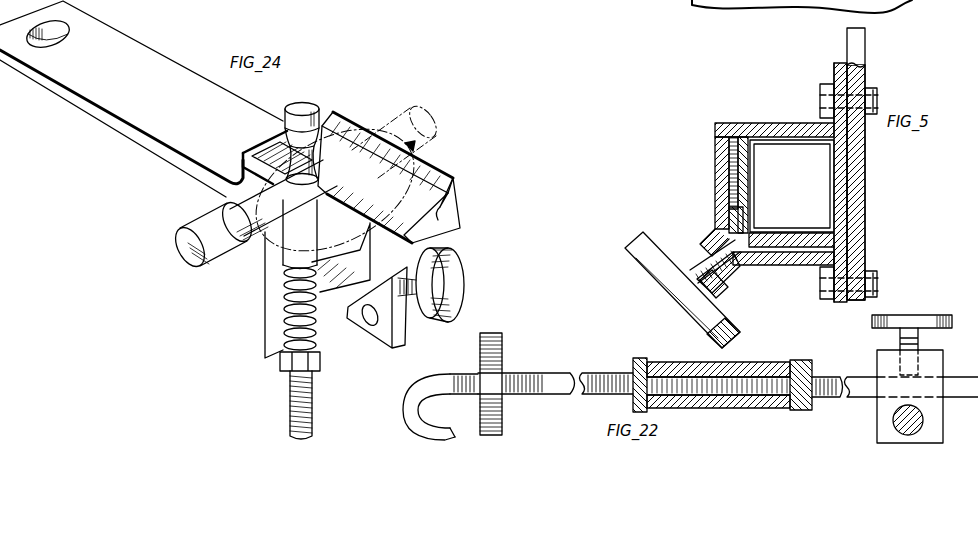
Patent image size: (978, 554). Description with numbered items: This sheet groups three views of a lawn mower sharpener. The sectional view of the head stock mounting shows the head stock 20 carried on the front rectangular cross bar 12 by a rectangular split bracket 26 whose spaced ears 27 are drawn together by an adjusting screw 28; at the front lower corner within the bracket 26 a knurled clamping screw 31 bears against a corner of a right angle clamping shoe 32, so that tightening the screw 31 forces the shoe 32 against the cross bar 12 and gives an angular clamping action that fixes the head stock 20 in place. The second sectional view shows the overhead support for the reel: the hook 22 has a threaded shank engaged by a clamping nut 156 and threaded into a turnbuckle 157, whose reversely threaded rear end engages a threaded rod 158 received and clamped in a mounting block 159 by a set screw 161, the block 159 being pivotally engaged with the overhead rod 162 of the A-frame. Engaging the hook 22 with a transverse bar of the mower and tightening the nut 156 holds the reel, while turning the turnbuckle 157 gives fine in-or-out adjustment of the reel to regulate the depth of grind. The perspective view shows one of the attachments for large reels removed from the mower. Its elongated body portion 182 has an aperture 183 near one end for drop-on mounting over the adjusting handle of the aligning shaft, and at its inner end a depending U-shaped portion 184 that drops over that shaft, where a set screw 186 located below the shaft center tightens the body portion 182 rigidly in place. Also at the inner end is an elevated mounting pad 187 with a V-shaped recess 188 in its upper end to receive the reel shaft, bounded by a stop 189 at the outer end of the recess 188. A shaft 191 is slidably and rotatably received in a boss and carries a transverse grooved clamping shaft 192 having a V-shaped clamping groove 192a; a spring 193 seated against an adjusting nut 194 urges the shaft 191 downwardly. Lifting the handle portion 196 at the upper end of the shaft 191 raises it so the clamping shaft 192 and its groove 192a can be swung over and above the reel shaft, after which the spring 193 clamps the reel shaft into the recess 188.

In FIG. 24, the body portion 182 is at (140, 62).
In FIG. 24, the aperture 183 is at (55, 30).
In FIG. 24, the stop 189 is at (275, 143).
In FIG. 24, the handle portion 196 is at (305, 111).
In FIG. 24, the transverse grooved clamping shaft 192 is at (186, 248).
In FIG. 24, the V-shaped clamping groove 192a is at (234, 212).
In FIG. 24, the elevated mounting pad 187 is at (437, 170).
In FIG. 24, the V-shaped recess 188 is at (446, 199).
In FIG. 24, the spring 193 is at (285, 300).
In FIG. 24, the adjusting nut 194 is at (283, 360).
In FIG. 24, the shaft 191 is at (290, 400).
In FIG. 24, the depending U-shaped portion 184 is at (388, 329).
In FIG. 24, the set screw 186 is at (453, 272).
In FIG. 24, the hook 22 is at (420, 437).
In FIG. 22, the clamping nut 156 is at (490, 342).
In FIG. 22, the turnbuckle 157 is at (713, 407).
In FIG. 22, the threaded rod 158 is at (823, 375).
In FIG. 22, the mounting block 159 is at (885, 410).
In FIG. 22, the set screw 161 is at (935, 315).
In FIG. 22, the overhead rod 162 is at (923, 423).
In FIG. 5, the head stock 20 is at (866, 53).
In FIG. 5, the rectangular split bracket 26 is at (715, 140).
In FIG. 5, the ears 27 is at (843, 80).
In FIG. 5, the adjusting screw 28 is at (820, 97).
In FIG. 5, the front rectangular cross bar 12 is at (783, 140).
In FIG. 5, the right angle clamping shoe 32 is at (744, 213).
In FIG. 5, the knurled clamping screw 31 is at (647, 260).